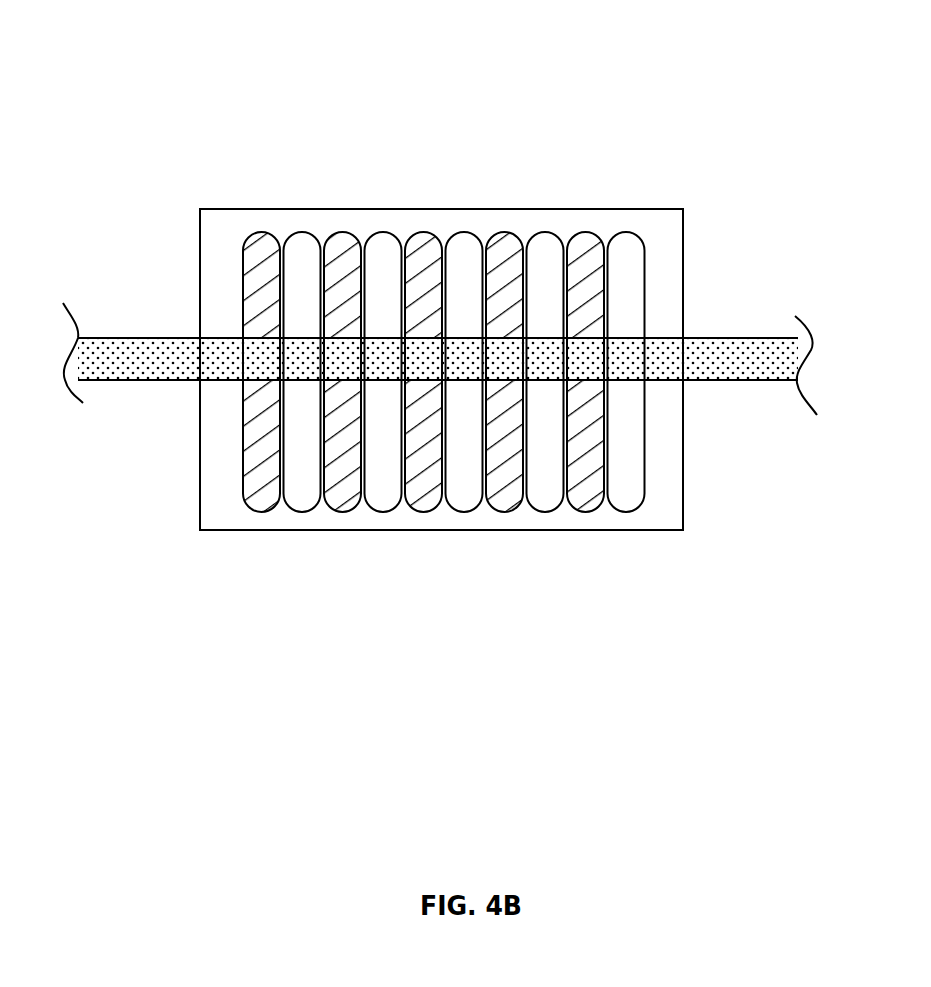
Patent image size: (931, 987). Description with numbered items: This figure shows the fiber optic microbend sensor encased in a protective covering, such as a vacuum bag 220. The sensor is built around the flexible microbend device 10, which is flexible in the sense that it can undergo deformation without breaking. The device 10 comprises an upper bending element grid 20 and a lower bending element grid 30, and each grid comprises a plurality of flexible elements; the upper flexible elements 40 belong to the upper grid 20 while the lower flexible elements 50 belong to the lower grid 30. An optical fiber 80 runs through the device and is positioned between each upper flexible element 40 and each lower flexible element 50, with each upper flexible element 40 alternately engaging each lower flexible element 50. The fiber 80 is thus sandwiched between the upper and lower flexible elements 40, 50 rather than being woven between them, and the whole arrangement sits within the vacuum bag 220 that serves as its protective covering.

The flexible microbend device 10 is at (440, 371).
The upper bending element grid 20 is at (432, 487).
The lower bending element grid 30 is at (459, 256).
The upper flexible element 40 is at (270, 431).
The lower flexible element 50 is at (621, 318).
The optical fiber 80 is at (174, 348).
The vacuum bag 220 is at (668, 531).